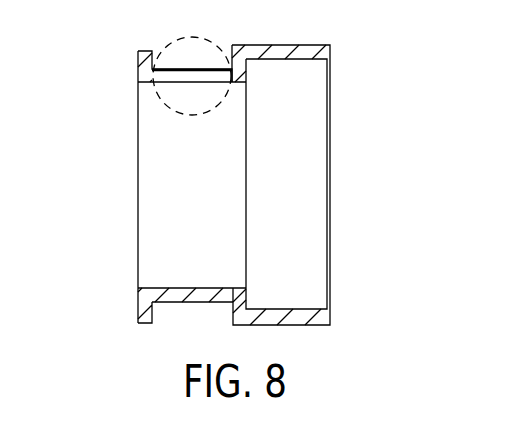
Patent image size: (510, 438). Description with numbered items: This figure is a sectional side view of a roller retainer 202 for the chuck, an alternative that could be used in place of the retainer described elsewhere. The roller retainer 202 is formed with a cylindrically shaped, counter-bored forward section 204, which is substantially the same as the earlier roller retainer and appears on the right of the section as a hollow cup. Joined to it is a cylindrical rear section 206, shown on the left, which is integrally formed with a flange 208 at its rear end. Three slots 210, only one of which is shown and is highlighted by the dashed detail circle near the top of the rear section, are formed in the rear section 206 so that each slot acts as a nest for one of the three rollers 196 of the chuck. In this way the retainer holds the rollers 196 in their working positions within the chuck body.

The roller 196 is at (163, 100).
The roller retainer 202 is at (243, 195).
The forward section 204 is at (323, 203).
The rear section 206 is at (141, 218).
The flange 208 is at (147, 323).
The slot 210 is at (180, 72).